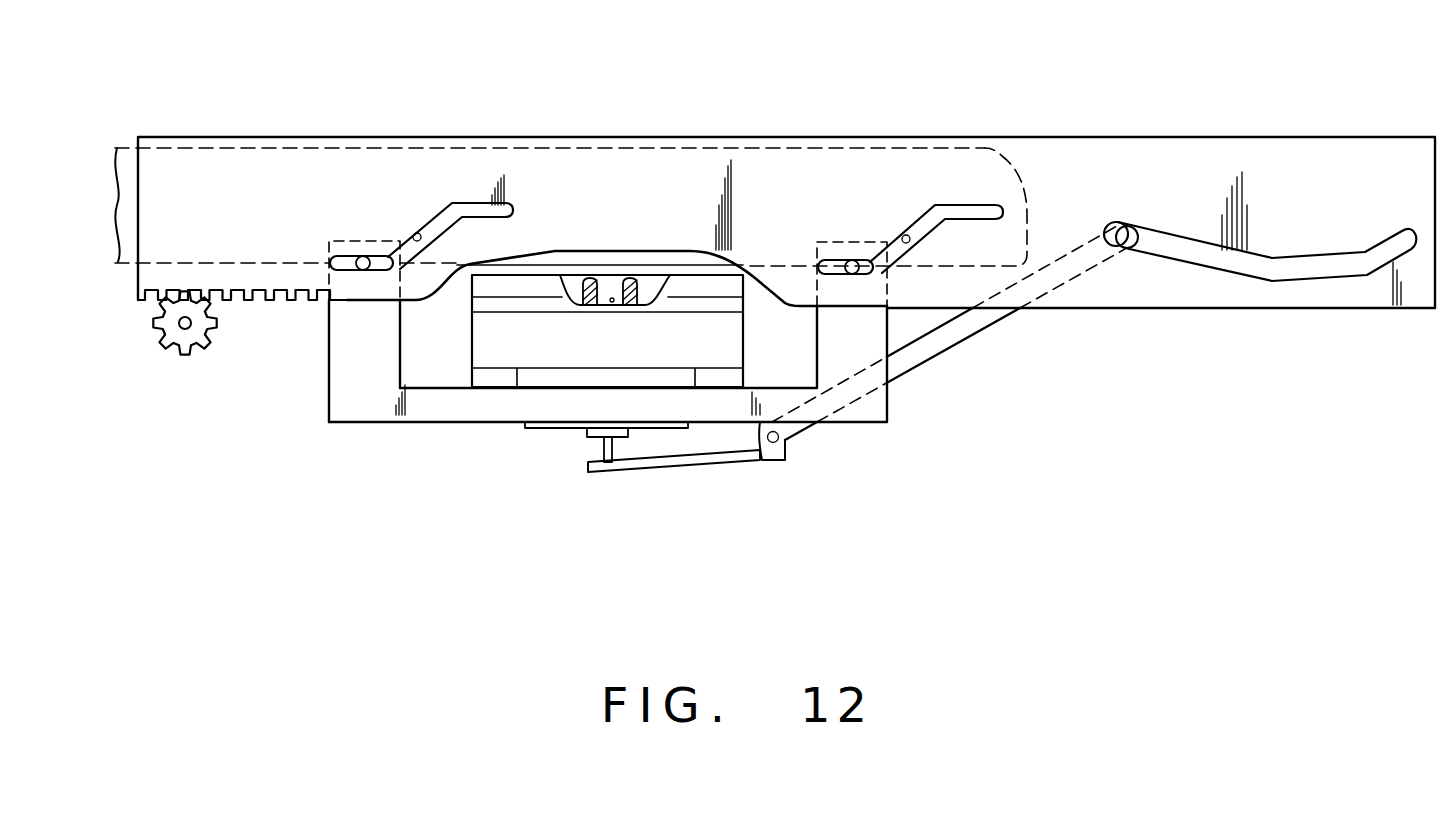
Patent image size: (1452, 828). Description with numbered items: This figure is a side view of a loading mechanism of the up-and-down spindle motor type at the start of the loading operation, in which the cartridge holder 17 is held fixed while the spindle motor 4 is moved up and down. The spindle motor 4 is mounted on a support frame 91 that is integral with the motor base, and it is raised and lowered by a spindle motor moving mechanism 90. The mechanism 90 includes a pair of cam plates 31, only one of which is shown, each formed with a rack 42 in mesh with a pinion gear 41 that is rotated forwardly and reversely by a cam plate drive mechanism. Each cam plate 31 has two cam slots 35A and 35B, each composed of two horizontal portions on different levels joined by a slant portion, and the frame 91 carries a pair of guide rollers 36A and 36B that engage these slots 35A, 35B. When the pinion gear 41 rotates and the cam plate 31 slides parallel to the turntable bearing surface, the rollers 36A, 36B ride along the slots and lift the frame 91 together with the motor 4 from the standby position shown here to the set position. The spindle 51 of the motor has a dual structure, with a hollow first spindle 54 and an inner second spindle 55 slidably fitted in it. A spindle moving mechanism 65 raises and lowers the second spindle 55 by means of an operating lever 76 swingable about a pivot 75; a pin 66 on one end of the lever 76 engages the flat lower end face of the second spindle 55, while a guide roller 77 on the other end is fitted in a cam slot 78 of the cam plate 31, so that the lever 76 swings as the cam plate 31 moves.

The spindle motor 4 is at (485, 340).
The cartridge holder 17 is at (125, 155).
The cam plate 31 is at (1157, 155).
The cam slot 35A is at (417, 235).
The cam slot 35B is at (905, 236).
The guide roller 36A is at (363, 256).
The guide roller 36B is at (853, 260).
The pinion gear 41 is at (190, 337).
The rack 42 is at (253, 302).
The spindle 51 is at (618, 298).
The first spindle 54 is at (647, 297).
The second spindle 55 is at (612, 298).
The spindle moving mechanism 65 is at (958, 345).
The pin 66 is at (592, 455).
The pivot 75 is at (782, 440).
The operating lever 76 is at (988, 318).
The guide roller 77 is at (1128, 242).
The cam slot 78 is at (1264, 260).
The spindle motor moving mechanism 90 is at (283, 382).
The support frame 91 is at (350, 405).